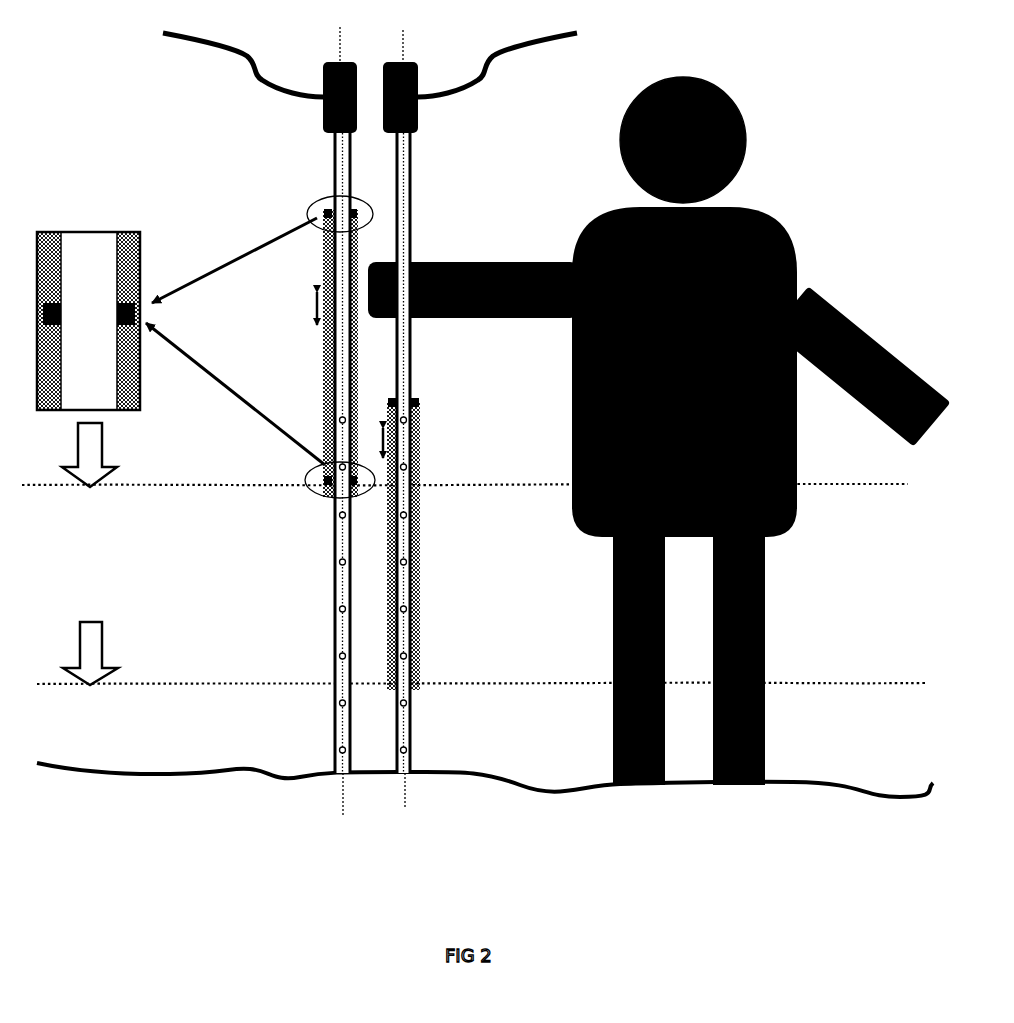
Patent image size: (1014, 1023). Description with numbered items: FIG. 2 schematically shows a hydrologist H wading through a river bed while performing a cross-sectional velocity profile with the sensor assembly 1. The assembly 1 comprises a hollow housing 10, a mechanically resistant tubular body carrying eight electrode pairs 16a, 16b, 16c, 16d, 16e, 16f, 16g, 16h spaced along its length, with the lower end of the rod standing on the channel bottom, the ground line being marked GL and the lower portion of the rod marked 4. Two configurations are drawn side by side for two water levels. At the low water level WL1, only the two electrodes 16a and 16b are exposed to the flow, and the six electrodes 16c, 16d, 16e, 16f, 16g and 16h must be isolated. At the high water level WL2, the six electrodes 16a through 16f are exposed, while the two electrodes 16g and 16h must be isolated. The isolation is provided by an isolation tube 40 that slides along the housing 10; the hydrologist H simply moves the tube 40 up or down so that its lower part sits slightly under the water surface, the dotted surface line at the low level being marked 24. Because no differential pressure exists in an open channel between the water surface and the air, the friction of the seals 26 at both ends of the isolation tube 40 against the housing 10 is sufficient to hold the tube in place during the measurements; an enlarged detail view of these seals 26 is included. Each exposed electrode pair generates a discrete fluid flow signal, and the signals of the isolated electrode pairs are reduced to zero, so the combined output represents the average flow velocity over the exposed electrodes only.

The sensor assembly 1 is at (312, 160).
The conduit 4 is at (340, 805).
The hollow housing 10 is at (332, 145).
The electrode 16a is at (335, 750).
The electrode 16b is at (335, 703).
The electrode 16c is at (335, 656).
The electrode 16d is at (335, 609).
The electrode 16e is at (335, 562).
The electrode 16f is at (335, 515).
The electrode 16g is at (335, 467).
The electrode 16h is at (335, 420).
The water surface 24 is at (440, 683).
The seals 26 is at (352, 213).
The isolation tube 40 is at (322, 365).
The hydrologist H is at (760, 218).
The ground level GL is at (100, 775).
The low water level WL1 is at (112, 652).
The high water level WL2 is at (465, 453).